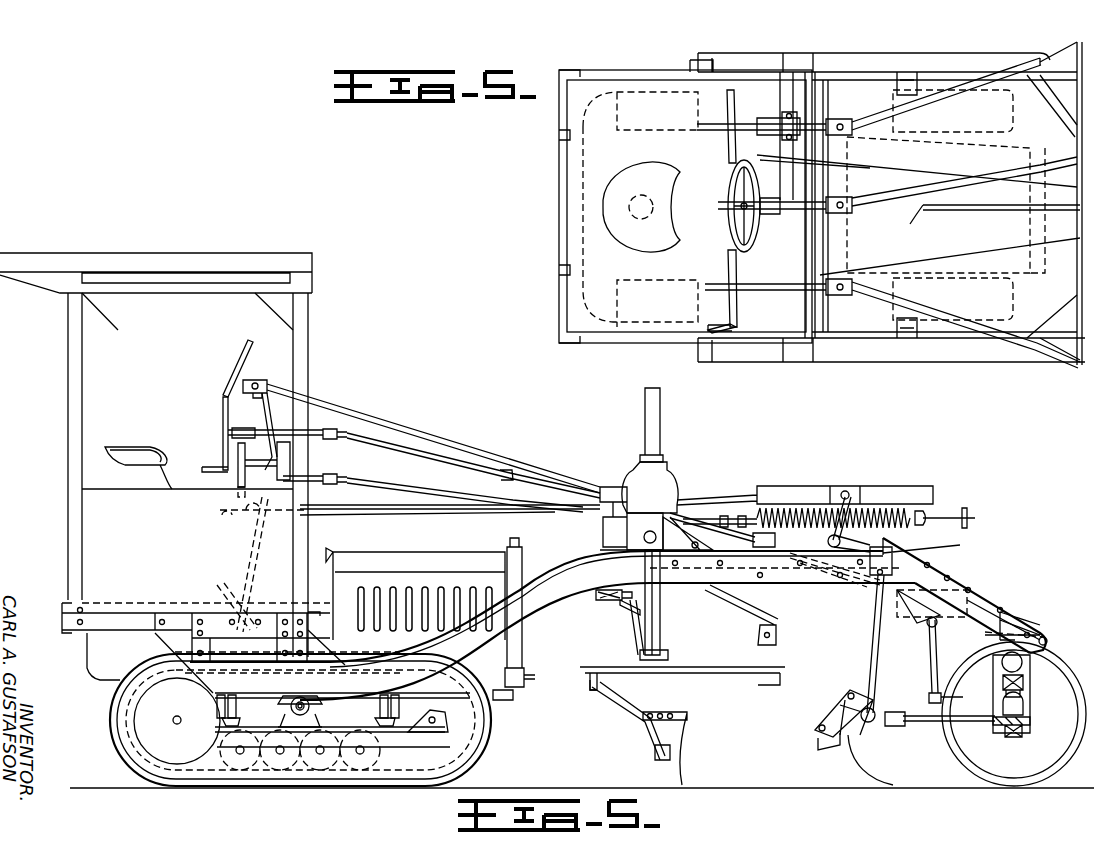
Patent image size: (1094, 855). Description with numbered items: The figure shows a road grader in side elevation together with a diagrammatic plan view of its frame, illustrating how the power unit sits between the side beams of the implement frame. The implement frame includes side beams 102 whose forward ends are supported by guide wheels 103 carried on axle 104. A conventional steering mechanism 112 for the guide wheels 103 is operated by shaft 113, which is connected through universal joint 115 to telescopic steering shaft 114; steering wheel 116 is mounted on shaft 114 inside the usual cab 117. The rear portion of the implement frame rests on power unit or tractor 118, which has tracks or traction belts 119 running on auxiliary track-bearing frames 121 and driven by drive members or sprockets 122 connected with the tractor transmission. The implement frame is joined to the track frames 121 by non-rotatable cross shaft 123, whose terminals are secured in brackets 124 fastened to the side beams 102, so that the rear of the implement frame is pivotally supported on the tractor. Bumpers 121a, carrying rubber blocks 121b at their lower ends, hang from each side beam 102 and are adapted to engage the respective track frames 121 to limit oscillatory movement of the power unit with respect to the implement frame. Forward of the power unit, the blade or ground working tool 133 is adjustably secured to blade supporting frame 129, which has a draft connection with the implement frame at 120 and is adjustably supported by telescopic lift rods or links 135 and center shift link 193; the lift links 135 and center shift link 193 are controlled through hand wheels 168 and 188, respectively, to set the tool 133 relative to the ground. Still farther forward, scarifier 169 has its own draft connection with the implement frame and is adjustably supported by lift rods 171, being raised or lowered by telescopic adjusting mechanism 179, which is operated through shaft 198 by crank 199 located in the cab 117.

In FIG. 6, the side beam 102 is at (700, 62).
In FIG. 5, the side beam 102 is at (686, 575).
In FIG. 5, the guide wheel 103 is at (1017, 770).
In FIG. 5, the axle 104 is at (1010, 740).
In FIG. 5, the steering mechanism 112 is at (925, 578).
In FIG. 5, the shaft 113 is at (784, 528).
In FIG. 6, the telescopic steering shaft 114 is at (888, 232).
In FIG. 5, the telescopic steering shaft 114 is at (333, 408).
In FIG. 5, the universal joint 115 is at (760, 546).
In FIG. 6, the steering wheel 116 is at (735, 186).
In FIG. 5, the steering wheel 116 is at (246, 341).
In FIG. 5, the cab 117 is at (305, 292).
In FIG. 5, the power unit 118 is at (430, 578).
In FIG. 5, the tracks 119 is at (403, 781).
In FIG. 5, the draft connection 120 is at (1025, 665).
In FIG. 5, the auxiliary track-bearing frame 121 is at (345, 762).
In FIG. 5, the bumper 121a is at (228, 700).
In FIG. 5, the rubber block 121b is at (226, 723).
In FIG. 5, the drive sprocket 122 is at (130, 730).
In FIG. 5, the shaft 123 is at (300, 712).
In FIG. 5, the bracket 124 is at (303, 700).
In FIG. 5, the blade supporting frame 129 is at (742, 668).
In FIG. 5, the blade 133 is at (680, 777).
In FIG. 5, the telescopic lift rod 135 is at (658, 624).
In FIG. 6, the hand wheel 168 is at (735, 100).
In FIG. 5, the hand wheel 168 is at (224, 434).
In FIG. 5, the scarifier 169 is at (880, 690).
In FIG. 5, the lift rod 171 is at (869, 666).
In FIG. 5, the telescopic adjusting mechanism 179 is at (783, 490).
In FIG. 6, the hand wheel 188 is at (732, 233).
In FIG. 5, the hand wheel 188 is at (240, 470).
In FIG. 5, the center shift link 193 is at (642, 636).
In FIG. 6, the shaft 198 is at (966, 256).
In FIG. 5, the shaft 198 is at (366, 505).
In FIG. 6, the crank 199 is at (712, 323).
In FIG. 5, the crank 199 is at (220, 540).